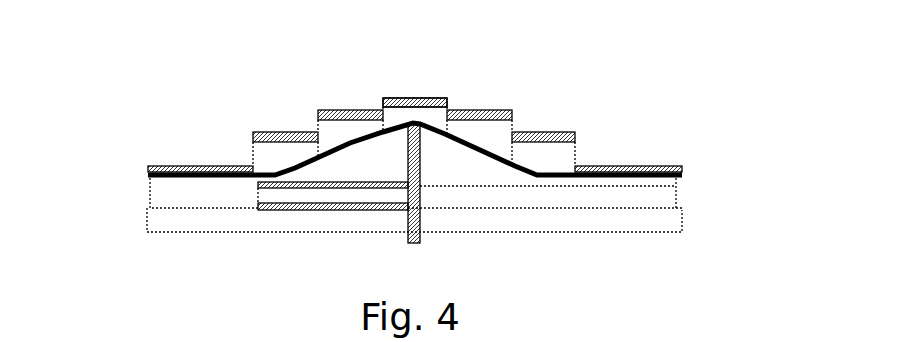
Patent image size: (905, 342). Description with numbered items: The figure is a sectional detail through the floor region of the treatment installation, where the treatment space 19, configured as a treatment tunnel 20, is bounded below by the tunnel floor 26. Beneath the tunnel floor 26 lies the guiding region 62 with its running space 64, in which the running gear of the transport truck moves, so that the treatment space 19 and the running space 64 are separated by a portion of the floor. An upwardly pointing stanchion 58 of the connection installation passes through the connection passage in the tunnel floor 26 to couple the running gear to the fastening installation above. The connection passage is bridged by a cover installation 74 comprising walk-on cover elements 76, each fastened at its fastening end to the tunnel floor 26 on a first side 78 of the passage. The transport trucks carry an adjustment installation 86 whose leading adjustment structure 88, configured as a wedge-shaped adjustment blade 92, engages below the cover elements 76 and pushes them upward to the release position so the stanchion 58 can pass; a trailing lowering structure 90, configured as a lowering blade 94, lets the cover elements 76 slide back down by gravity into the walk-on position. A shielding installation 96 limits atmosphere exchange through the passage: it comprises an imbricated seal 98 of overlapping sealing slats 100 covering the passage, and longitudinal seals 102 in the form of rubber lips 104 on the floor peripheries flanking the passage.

The treatment space 19 is at (129, 76).
The treatment tunnel 20 is at (131, 52).
The tunnel floor 26 is at (172, 228).
The stanchion 58 is at (418, 243).
The guiding region 62 is at (242, 249).
The running space 64 is at (704, 232).
The cover installation 74 is at (588, 100).
The cover element 76 is at (288, 132).
The first side 78 is at (131, 216).
The adjustment installation 86 is at (496, 198).
The adjustment structure 88 is at (500, 186).
The lowering structure 90 is at (367, 168).
The adjustment blade 92 is at (435, 147).
The lowering blade 94 is at (341, 170).
The shielding installation 96 is at (696, 172).
The imbricated seal 98 is at (696, 159).
The sealing slat 100 is at (208, 168).
The longitudinal seal 102 is at (585, 197).
The rubber lip 104 is at (300, 210).